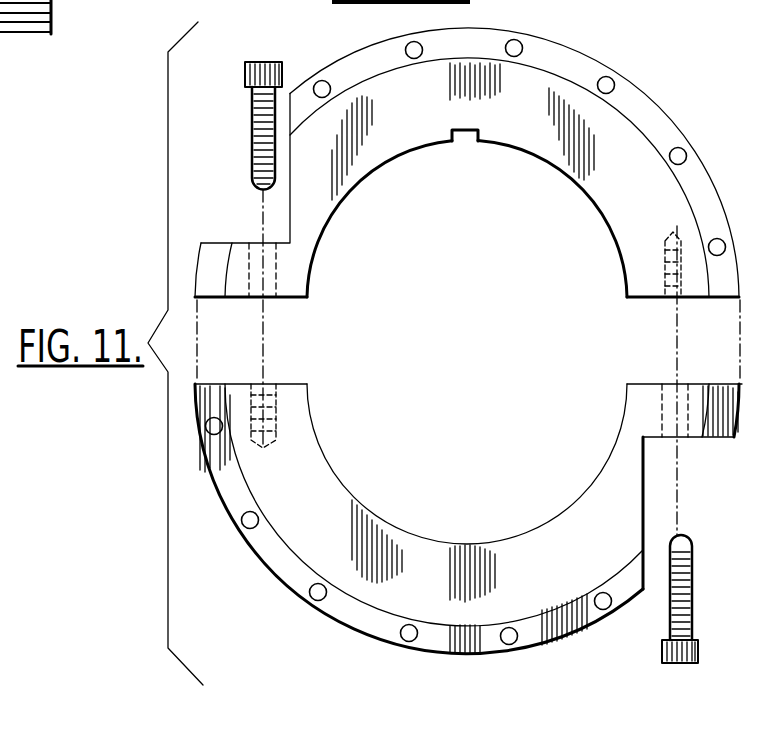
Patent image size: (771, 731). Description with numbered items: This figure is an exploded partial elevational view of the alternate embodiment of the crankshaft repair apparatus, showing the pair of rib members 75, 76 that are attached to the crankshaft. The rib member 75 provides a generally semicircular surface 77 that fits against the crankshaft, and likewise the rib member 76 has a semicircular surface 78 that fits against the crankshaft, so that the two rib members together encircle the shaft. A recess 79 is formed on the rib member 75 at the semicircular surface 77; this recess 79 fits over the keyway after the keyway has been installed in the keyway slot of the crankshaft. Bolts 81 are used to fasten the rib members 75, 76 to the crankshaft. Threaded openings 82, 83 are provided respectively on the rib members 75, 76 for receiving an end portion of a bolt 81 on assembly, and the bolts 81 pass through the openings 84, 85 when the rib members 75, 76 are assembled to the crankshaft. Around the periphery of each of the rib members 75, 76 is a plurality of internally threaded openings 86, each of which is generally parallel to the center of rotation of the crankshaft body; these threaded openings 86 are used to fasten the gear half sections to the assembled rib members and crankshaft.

The rib member 75 is at (580, 72).
The rib member 76 is at (330, 490).
The semicircular surface 77 is at (410, 152).
The semicircular surface 78 is at (603, 474).
The recess 79 is at (462, 141).
The bolt 81 is at (251, 110).
The threaded opening 82 is at (672, 298).
The threaded opening 83 is at (265, 383).
The opening 84 is at (250, 241).
The opening 85 is at (689, 383).
The internally threaded opening 86 is at (316, 80).